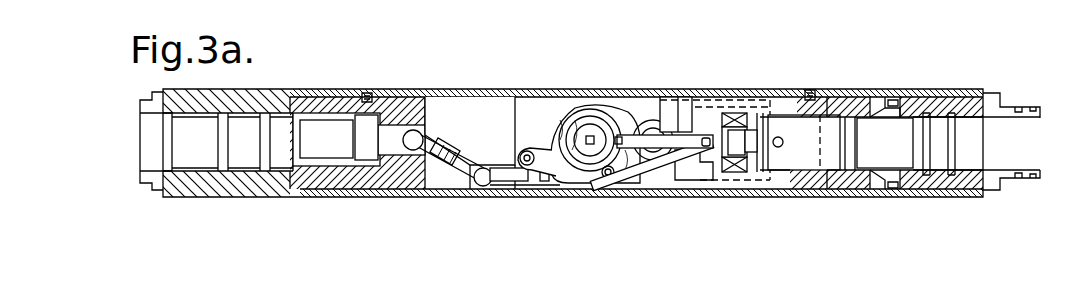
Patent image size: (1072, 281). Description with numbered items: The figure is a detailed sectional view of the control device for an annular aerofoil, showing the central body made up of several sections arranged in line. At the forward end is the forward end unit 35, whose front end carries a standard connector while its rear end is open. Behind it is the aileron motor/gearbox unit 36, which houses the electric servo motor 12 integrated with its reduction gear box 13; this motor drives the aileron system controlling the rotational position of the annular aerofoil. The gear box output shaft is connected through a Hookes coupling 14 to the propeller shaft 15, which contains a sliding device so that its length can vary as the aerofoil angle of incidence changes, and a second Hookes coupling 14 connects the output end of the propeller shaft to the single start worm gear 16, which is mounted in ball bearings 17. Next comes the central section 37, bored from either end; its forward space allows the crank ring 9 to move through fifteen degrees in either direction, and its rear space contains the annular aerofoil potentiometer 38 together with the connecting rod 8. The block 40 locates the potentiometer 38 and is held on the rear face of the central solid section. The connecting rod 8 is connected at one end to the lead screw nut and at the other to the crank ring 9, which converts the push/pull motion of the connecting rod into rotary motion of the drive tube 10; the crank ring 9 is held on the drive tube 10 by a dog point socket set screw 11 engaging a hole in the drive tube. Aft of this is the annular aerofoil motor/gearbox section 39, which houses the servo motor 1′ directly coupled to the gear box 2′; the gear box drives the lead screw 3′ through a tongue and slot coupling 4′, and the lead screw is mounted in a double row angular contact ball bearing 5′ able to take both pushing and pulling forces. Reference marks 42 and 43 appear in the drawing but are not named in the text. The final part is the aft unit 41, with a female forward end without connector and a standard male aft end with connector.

The servo motor 1′ is at (877, 153).
The gear box 2′ is at (825, 143).
The lead screw 3′ is at (712, 163).
The tongue and slot coupling 4′ is at (762, 145).
The double row angular contact ball bearing 5′ is at (752, 148).
The connecting rod 8 is at (675, 148).
The crank ring 9 is at (575, 183).
The drive tube 10 is at (595, 153).
The dog point socket set screw 11 is at (625, 147).
The electric servo motor 12 is at (325, 145).
The reduction gear box 13 is at (367, 148).
The Hookes coupling 14 is at (395, 143).
The propeller shaft 15 is at (442, 155).
The single start worm gear 16 is at (532, 185).
The ball bearings 17 is at (548, 187).
The forward end unit 35 is at (215, 186).
The aileron motor/gearbox unit 36 is at (338, 105).
The central section 37 is at (460, 89).
The annular aerofoil potentiometer 38 is at (647, 123).
The annular aerofoil motor/gearbox section 39 is at (837, 95).
The block 40 is at (667, 120).
The aft unit 41 is at (942, 93).
The pivot 42 is at (517, 150).
The lever body 43 is at (622, 113).